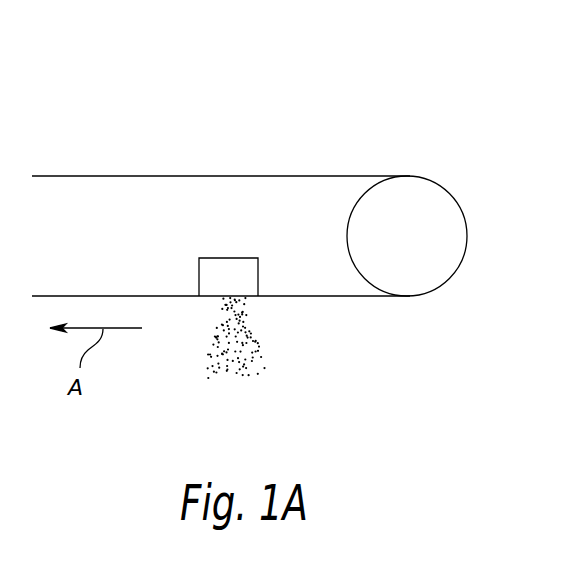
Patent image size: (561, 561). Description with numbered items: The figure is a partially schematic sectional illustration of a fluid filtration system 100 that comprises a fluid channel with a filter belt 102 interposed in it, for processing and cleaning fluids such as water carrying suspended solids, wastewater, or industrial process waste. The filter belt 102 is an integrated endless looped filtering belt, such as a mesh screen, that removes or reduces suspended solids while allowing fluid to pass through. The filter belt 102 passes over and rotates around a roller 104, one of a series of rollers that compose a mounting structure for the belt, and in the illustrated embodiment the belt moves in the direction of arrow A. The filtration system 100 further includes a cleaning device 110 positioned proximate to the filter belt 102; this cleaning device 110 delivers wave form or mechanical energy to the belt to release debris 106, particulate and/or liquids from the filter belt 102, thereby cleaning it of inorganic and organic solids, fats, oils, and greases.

The fluid filtration system 100 is at (435, 107).
The filter belt 102 is at (263, 175).
The roller 104 is at (443, 227).
The debris 106 is at (276, 352).
The cleaning device 110 is at (199, 275).